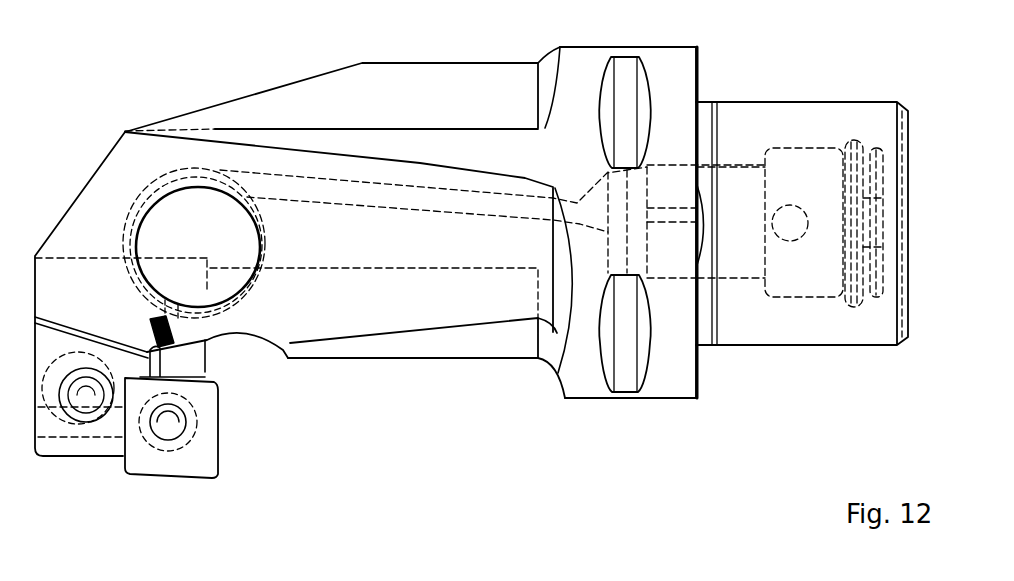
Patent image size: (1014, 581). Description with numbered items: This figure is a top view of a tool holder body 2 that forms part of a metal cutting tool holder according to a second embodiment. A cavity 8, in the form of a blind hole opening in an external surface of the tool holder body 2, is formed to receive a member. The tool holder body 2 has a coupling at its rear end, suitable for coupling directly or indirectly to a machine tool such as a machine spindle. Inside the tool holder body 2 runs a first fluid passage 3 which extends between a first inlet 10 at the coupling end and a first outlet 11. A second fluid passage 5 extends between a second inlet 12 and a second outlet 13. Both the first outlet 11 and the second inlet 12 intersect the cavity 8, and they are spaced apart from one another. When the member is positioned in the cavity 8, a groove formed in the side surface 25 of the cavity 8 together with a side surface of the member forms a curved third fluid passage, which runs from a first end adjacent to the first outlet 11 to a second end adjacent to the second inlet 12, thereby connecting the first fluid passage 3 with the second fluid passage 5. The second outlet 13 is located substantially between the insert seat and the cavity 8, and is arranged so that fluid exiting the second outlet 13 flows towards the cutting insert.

The tool holder body 2 is at (375, 108).
The first fluid passage 3 is at (440, 202).
The second fluid passage 5 is at (148, 297).
The cavity 8 is at (187, 235).
The first inlet 10 is at (699, 205).
The first outlet 11 is at (208, 180).
The second inlet 12 is at (128, 243).
The second outlet 13 is at (203, 372).
The side surface of the cavity 25 is at (180, 293).